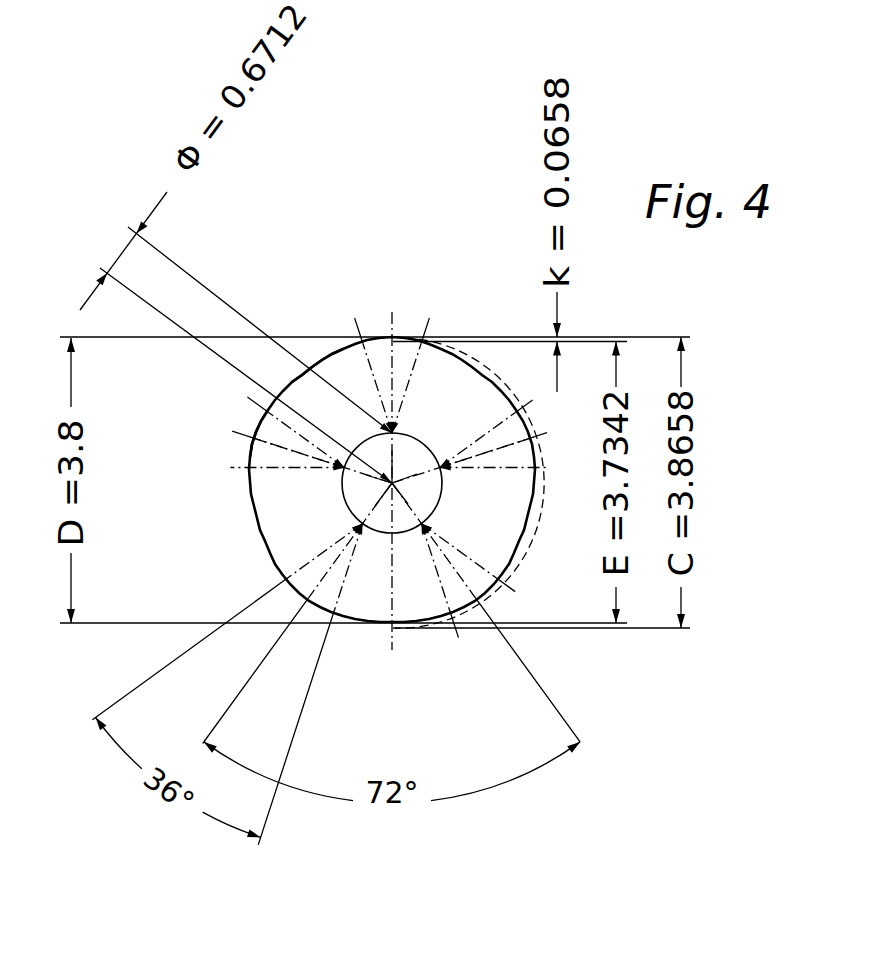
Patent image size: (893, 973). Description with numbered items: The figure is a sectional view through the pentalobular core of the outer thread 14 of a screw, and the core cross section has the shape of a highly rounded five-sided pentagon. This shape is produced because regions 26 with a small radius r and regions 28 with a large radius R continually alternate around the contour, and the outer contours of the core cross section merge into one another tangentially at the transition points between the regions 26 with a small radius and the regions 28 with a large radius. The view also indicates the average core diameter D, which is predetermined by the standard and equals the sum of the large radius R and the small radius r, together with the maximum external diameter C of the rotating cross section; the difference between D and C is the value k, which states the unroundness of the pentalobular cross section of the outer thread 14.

The outer thread 14 is at (442, 403).
The regions with a small radius 26 is at (253, 430).
The regions with a large radius 28 is at (314, 342).